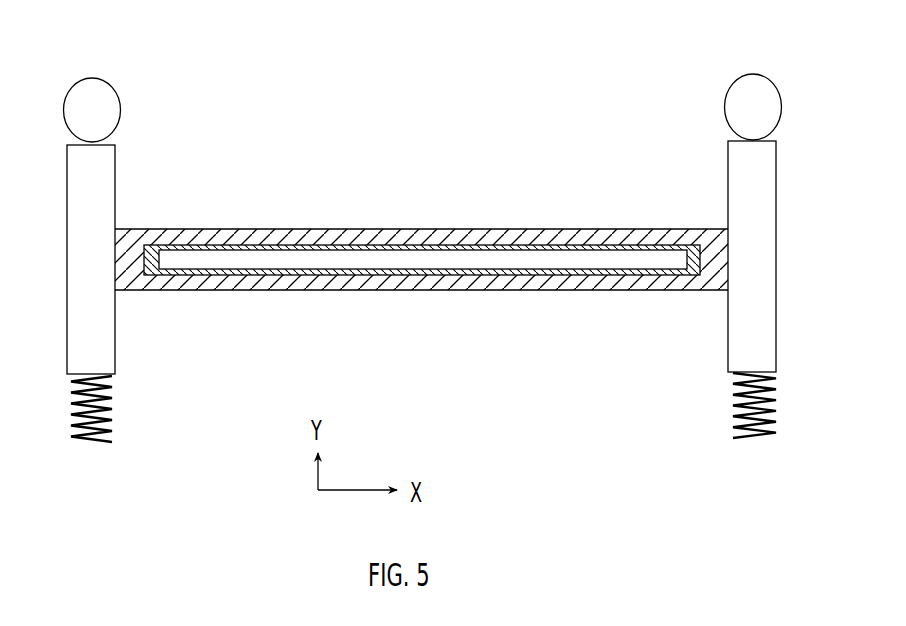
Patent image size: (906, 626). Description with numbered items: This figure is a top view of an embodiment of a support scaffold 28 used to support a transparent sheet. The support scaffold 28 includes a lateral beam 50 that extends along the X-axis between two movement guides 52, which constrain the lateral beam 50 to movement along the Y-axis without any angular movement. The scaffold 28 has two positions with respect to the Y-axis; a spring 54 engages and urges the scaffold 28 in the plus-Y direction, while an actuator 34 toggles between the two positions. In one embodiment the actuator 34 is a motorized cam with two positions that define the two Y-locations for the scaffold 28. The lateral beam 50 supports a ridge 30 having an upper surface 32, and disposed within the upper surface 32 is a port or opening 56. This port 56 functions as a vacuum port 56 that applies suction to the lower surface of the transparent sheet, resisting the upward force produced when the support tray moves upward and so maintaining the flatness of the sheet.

The support scaffold 28 is at (491, 92).
The ridge 30 is at (422, 221).
The upper surface 32 is at (207, 245).
The actuator 34 is at (110, 102).
The lateral beam 50 is at (135, 248).
The movement guide 52 is at (98, 173).
The spring 54 is at (115, 400).
The vacuum port 56 is at (310, 262).